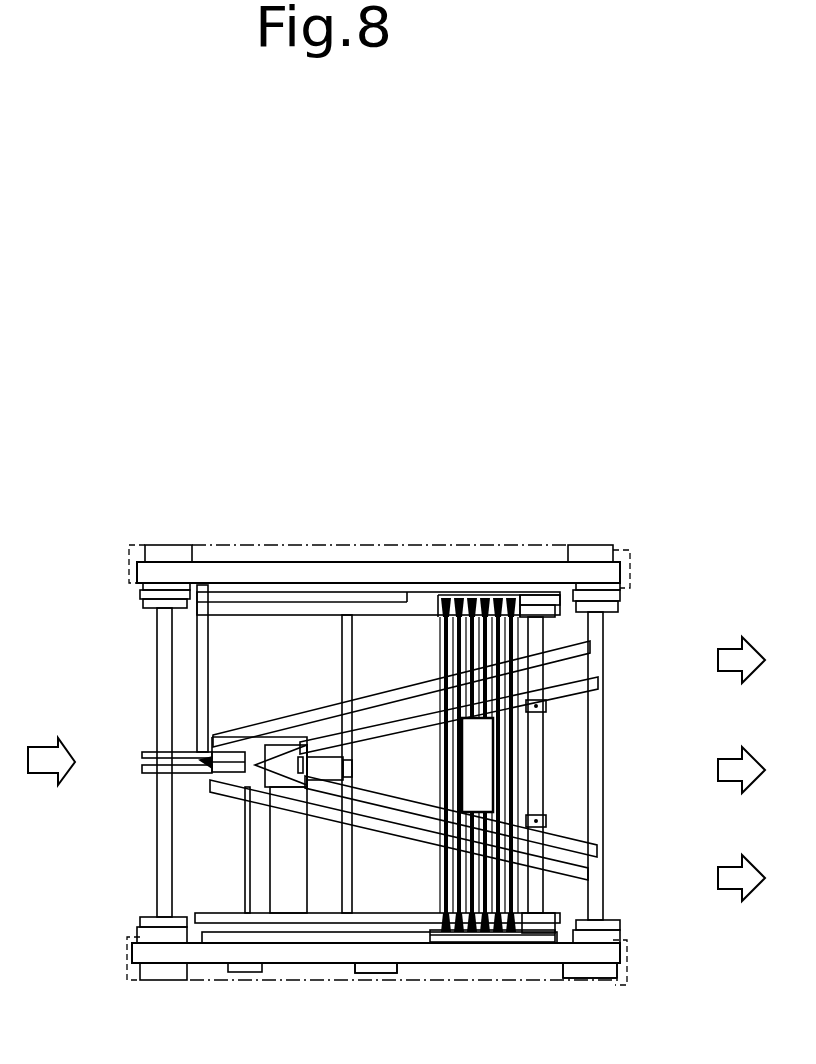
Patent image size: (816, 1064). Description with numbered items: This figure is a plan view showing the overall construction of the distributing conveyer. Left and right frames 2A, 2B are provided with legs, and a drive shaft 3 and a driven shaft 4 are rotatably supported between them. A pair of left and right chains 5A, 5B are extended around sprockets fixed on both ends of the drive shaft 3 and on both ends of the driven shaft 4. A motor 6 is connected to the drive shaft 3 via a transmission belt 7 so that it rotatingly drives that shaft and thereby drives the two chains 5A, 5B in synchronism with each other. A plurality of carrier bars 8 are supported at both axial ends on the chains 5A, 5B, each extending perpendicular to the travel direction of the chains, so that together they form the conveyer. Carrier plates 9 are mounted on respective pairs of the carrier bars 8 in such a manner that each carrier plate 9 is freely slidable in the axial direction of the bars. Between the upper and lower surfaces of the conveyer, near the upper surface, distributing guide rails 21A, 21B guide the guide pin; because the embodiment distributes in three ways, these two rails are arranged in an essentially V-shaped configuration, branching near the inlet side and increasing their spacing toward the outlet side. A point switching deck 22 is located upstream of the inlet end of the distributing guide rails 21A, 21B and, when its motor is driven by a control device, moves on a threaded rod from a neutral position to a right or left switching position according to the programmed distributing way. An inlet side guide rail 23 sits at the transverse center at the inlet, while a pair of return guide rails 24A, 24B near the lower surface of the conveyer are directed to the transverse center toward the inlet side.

The left frame 2A is at (333, 548).
The right frame 2B is at (295, 983).
The drive shaft 3 is at (600, 722).
The driven shaft 4 is at (158, 681).
The left chain 5A is at (507, 578).
The right chain 5B is at (432, 957).
The motor 6 is at (360, 975).
The transmission belt 7 is at (517, 975).
The carrier bar 8 is at (600, 905).
The carrier plate 9 is at (495, 765).
The distributing guide rail 21A is at (600, 680).
The distributing guide rail 21B is at (575, 847).
The point switching deck 22 is at (277, 873).
The inlet side guide rail 23 is at (148, 775).
The return guide rail 24A is at (577, 634).
The return guide rail 24B is at (575, 876).